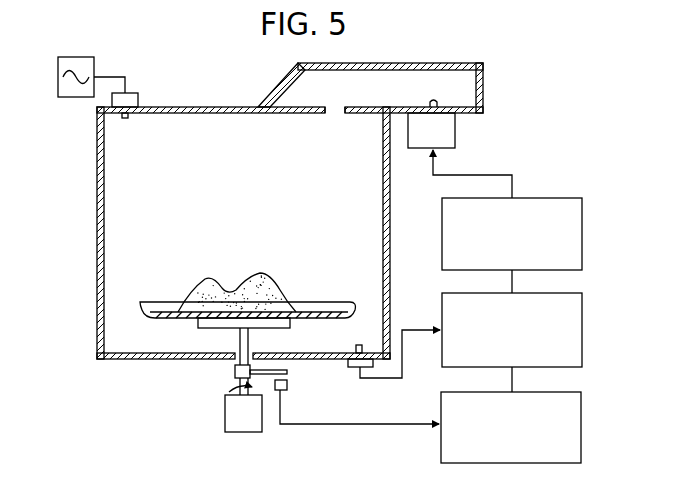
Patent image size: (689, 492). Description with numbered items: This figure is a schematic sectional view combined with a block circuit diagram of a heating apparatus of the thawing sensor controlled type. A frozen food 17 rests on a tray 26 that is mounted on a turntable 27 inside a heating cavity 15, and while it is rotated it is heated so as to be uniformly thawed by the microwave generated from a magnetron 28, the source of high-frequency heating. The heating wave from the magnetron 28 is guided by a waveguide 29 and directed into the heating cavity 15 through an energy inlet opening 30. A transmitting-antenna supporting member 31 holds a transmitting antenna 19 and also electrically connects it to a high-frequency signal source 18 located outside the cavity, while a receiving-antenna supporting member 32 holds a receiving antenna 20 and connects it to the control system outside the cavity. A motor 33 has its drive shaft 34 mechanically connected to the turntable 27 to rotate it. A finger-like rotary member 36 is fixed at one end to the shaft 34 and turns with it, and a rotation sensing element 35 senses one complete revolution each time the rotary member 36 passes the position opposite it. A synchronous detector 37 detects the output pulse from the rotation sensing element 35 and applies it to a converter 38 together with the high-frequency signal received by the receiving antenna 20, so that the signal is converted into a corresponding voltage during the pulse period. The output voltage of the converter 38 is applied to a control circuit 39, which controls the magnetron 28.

The heating cavity 15 is at (100, 208).
The frozen food 17 is at (278, 291).
The high-frequency signal source 18 is at (58, 70).
The transmitting antenna 19 is at (125, 118).
The receiving antenna 20 is at (358, 345).
The tray 26 is at (162, 316).
The turntable 27 is at (200, 322).
The magnetron 28 is at (455, 130).
The waveguide 29 is at (483, 88).
The energy inlet opening 30 is at (333, 113).
The transmitting-antenna supporting member 31 is at (150, 88).
The receiving-antenna supporting member 32 is at (361, 370).
The motor 33 is at (225, 412).
The drive shaft 34 is at (248, 331).
The rotation sensing element 35 is at (287, 389).
The rotary member 36 is at (287, 372).
The synchronous detector 37 is at (581, 428).
The converter 38 is at (582, 338).
The control circuit 39 is at (582, 232).